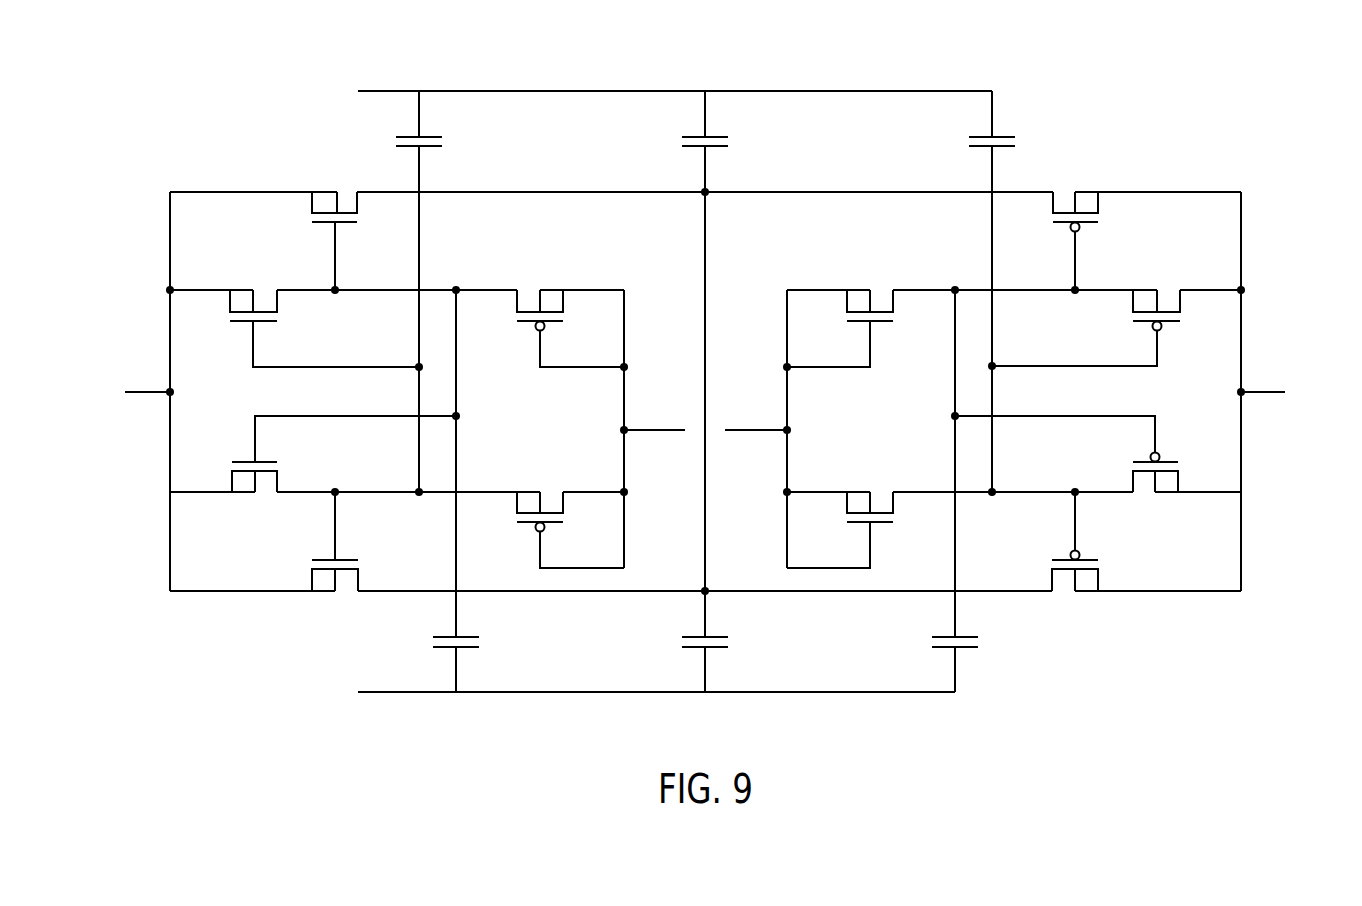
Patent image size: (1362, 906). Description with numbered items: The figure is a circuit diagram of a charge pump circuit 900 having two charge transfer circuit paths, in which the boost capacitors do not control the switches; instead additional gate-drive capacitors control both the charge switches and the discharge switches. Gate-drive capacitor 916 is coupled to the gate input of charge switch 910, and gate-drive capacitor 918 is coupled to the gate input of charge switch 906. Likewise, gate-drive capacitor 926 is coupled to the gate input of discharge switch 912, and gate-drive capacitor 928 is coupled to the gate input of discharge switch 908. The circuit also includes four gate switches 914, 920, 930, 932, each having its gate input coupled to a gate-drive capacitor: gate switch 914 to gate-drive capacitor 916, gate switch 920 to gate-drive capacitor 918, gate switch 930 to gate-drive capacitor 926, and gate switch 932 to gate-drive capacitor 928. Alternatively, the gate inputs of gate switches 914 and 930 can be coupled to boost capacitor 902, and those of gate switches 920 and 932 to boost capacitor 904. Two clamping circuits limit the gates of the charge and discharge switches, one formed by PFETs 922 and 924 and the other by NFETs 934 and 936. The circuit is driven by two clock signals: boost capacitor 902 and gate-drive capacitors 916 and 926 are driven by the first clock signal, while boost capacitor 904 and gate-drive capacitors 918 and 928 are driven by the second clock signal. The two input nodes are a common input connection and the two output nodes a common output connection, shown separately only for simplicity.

The charge pump circuit 900 is at (1226, 74).
The boost capacitor 902 is at (716, 136).
The boost capacitor 904 is at (716, 636).
The charge switch 906 is at (348, 226).
The discharge switch 908 is at (1086, 226).
The charge switch 910 is at (349, 558).
The discharge switch 912 is at (1088, 558).
The gate switch 914 is at (266, 323).
The gate-drive capacitor 916 is at (432, 136).
The gate-drive capacitor 918 is at (467, 636).
The gate switch 920 is at (266, 460).
The PFET 922 is at (556, 324).
The PFET 924 is at (556, 525).
The gate-drive capacitor 926 is at (1001, 136).
The gate-drive capacitor 928 is at (966, 636).
The gate switch 930 is at (1168, 324).
The gate switch 932 is at (1168, 458).
The NFET 934 is at (884, 324).
The NFET 936 is at (884, 525).